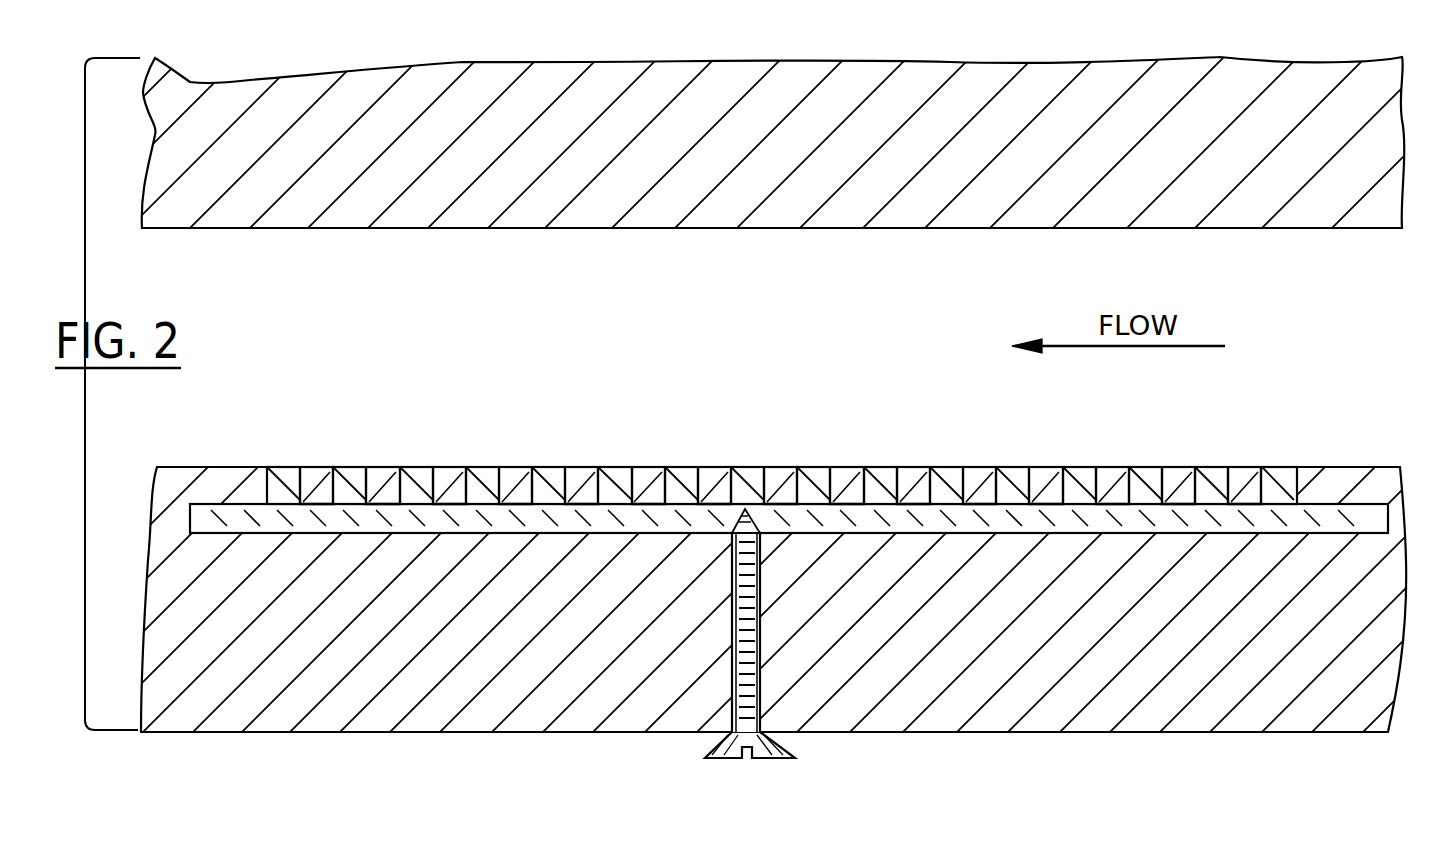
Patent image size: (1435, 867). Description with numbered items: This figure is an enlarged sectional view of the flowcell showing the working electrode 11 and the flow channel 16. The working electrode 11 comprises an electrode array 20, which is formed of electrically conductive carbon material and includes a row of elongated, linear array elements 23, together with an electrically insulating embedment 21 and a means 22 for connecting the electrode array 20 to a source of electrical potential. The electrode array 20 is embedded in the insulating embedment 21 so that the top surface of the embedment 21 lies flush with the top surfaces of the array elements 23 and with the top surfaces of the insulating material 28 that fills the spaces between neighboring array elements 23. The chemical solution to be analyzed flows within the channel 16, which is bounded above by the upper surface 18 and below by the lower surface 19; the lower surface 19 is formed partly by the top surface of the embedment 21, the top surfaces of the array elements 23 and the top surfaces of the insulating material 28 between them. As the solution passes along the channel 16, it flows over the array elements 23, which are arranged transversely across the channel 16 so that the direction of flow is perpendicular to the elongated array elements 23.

The working electrode 11 is at (1087, 736).
The flow channel 16 is at (1213, 270).
The upper surface 18 is at (579, 231).
The lower surface 19 is at (181, 467).
The electrode array 20 is at (233, 503).
The electrically insulating embedment 21 is at (1008, 712).
The means for connecting the electrode array 22 is at (712, 748).
The array elements 23 is at (613, 467).
The insulating material 28 is at (1107, 467).